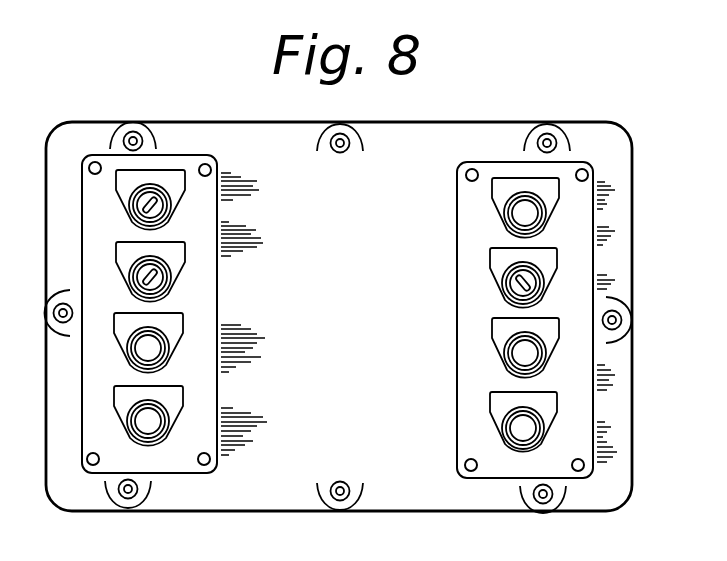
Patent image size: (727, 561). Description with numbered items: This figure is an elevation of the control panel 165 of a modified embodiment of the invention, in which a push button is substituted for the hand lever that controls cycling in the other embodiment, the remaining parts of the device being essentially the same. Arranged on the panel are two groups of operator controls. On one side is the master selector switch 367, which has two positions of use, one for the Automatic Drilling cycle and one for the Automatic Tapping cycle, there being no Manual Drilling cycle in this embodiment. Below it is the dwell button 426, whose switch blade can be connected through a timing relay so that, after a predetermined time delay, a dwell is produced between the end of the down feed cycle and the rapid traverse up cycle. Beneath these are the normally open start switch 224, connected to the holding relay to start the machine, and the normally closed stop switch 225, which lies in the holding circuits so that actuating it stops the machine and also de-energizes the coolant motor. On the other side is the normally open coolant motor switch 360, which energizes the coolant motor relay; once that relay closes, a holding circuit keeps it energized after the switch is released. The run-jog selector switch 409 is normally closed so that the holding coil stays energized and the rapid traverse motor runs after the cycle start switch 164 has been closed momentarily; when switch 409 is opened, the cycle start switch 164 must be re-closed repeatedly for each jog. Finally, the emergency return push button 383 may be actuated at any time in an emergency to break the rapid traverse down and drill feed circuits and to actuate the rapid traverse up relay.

The control panel 165 is at (622, 360).
The master selector switch 367 is at (157, 206).
The dwell button 426 is at (157, 278).
The start switch 224 is at (155, 349).
The stop switch 225 is at (153, 422).
The coolant motor switch 360 is at (520, 214).
The run-jog selector switch 409 is at (518, 284).
The cycle start switch 164 is at (520, 356).
The emergency return push button 383 is at (518, 430).